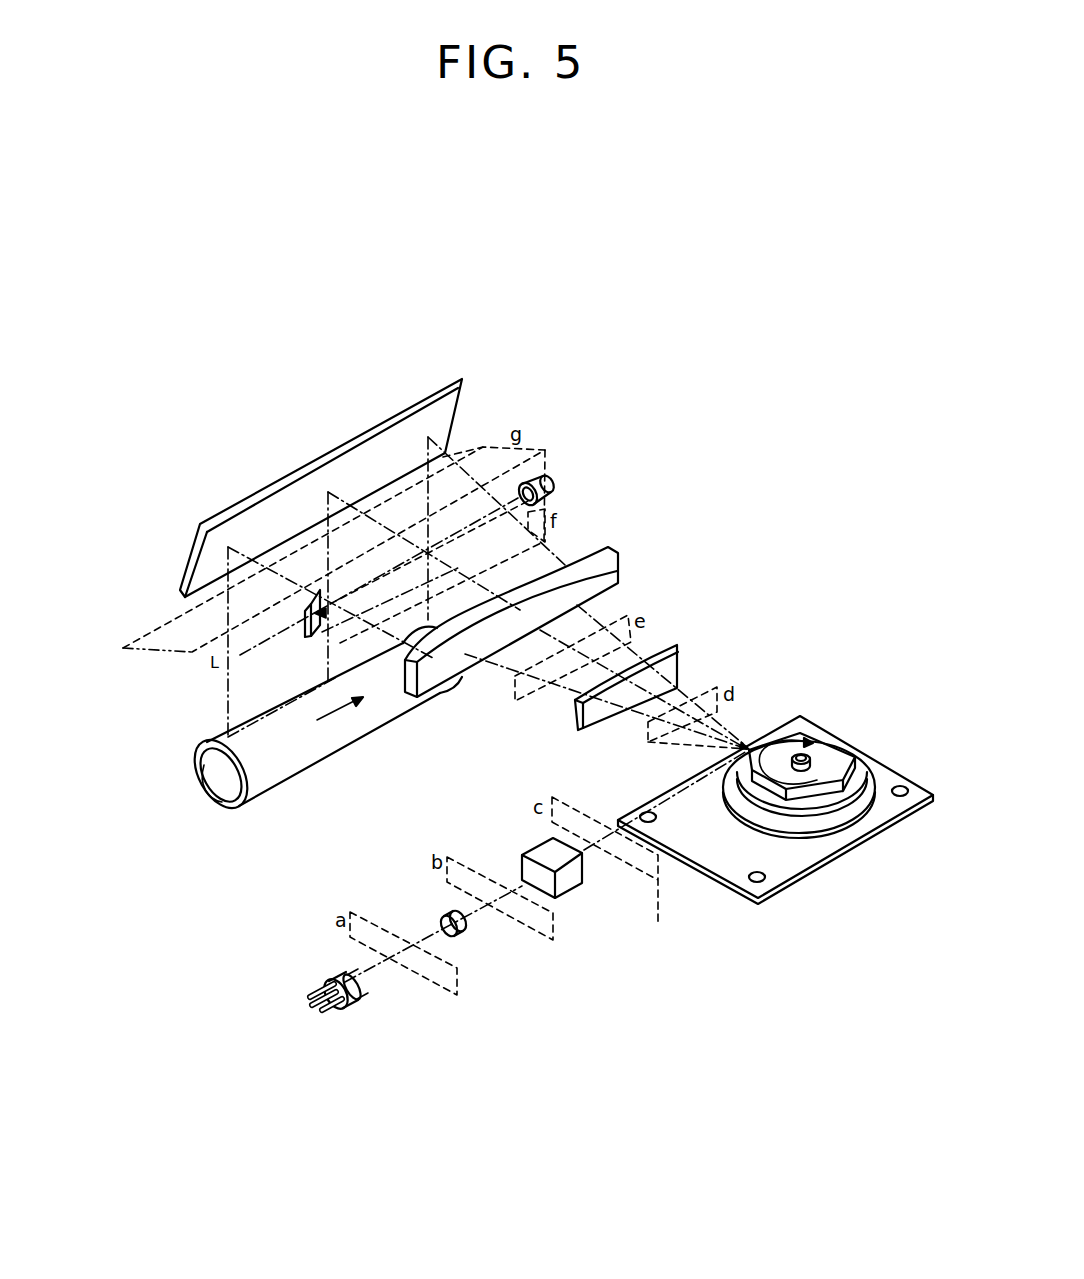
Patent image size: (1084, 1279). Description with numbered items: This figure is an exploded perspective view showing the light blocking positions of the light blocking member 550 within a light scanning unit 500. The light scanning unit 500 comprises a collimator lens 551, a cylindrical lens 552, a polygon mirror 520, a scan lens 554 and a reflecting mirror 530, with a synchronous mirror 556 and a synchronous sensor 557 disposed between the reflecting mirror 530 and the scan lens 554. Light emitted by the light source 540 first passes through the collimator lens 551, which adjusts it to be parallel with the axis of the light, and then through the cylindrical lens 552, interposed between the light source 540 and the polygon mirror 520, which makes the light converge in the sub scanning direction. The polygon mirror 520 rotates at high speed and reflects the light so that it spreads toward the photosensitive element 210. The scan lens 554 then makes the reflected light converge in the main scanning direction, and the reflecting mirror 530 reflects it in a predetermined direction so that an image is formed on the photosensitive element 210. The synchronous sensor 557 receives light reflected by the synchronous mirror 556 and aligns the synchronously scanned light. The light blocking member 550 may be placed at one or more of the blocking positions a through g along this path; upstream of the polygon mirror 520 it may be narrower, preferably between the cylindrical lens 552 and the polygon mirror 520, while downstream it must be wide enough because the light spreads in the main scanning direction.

The light scanning unit 500 is at (134, 345).
The reflecting mirror 530 is at (463, 378).
The synchronous sensor 557 is at (543, 477).
The scan lens 554 is at (615, 572).
The polygon mirror 520 is at (825, 747).
The synchronous mirror 556 is at (305, 637).
The photosensitive element 210 is at (196, 768).
The cylindrical lens 552 is at (582, 883).
The light blocking member 550 is at (658, 925).
The collimator lens 551 is at (465, 933).
The light source 540 is at (357, 1008).